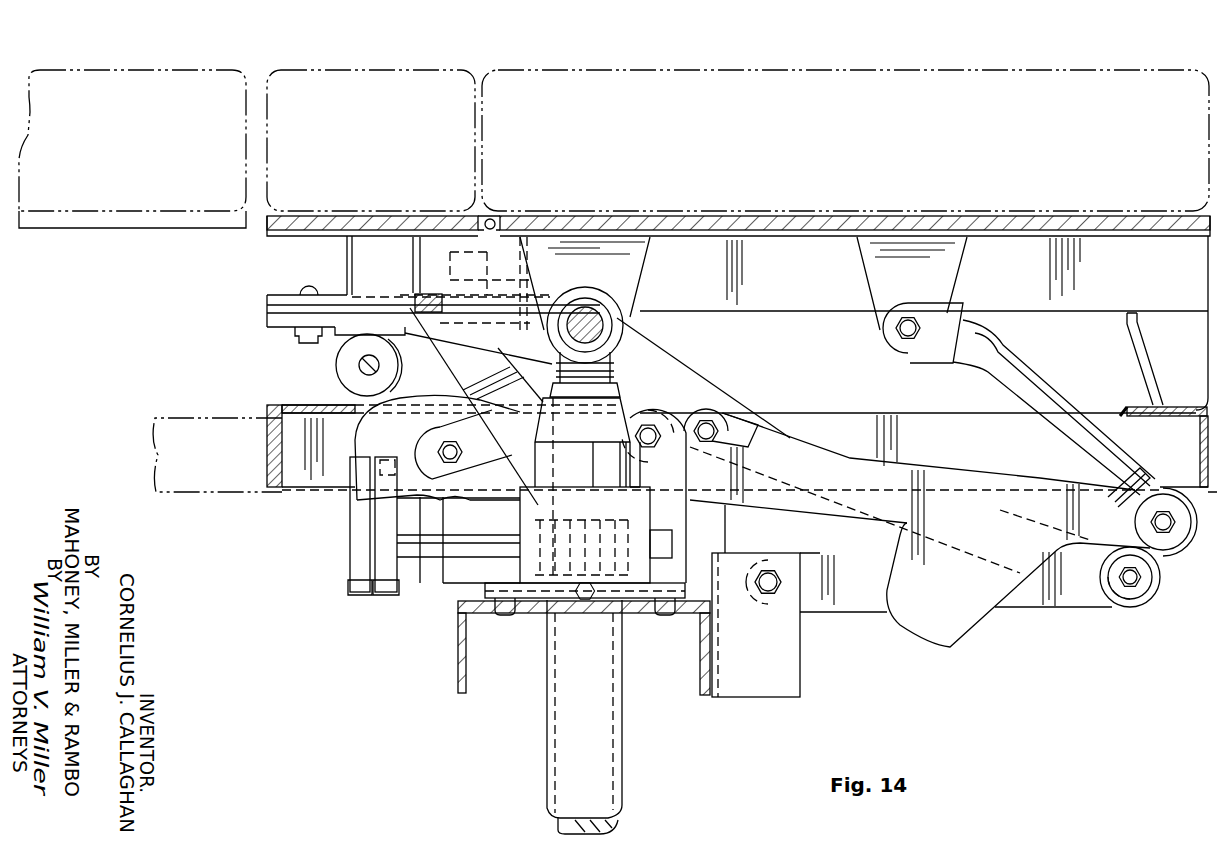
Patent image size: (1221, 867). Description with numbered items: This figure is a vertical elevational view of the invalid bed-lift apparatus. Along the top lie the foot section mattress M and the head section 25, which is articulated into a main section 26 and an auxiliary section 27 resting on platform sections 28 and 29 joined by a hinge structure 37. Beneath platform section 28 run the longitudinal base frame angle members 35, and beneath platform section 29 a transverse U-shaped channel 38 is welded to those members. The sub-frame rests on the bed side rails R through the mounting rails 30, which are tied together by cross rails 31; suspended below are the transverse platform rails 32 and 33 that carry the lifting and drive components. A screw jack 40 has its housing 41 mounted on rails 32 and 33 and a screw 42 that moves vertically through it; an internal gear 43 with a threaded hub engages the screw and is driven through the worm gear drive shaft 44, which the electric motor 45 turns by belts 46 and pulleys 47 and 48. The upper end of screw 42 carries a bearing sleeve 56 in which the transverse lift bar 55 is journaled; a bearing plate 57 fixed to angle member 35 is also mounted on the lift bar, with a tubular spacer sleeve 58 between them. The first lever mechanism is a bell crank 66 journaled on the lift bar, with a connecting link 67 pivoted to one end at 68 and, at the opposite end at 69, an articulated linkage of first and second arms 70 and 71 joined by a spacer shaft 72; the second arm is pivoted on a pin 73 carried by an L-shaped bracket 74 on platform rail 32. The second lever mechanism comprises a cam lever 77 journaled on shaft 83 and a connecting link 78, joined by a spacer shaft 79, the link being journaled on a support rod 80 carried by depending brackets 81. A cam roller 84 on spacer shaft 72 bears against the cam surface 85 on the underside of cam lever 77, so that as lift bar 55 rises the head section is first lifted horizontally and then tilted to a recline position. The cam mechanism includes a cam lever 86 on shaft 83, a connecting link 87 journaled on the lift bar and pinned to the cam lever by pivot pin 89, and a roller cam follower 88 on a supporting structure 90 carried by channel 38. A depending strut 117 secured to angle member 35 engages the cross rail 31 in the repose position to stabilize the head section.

The first mattress portion M is at (176, 68).
The side rails R is at (234, 418).
The second mattress portion 25 is at (824, 70).
The main section 26 is at (1070, 70).
The auxiliary section 27 is at (396, 70).
The platform section 28 is at (1095, 217).
The platform section 29 is at (378, 217).
The mounting rails 30 is at (878, 412).
The cross rails 31 is at (320, 405).
The platform rail 32 is at (700, 678).
The platform rail 33 is at (466, 670).
The structural angle members 35 is at (832, 283).
The hinge structure 37 is at (490, 218).
The U-shaped channel 38 is at (308, 294).
The screw jack 40 is at (622, 720).
The housing 41 is at (637, 463).
The screw 42 is at (613, 378).
The gear 43 is at (536, 606).
The worm gear drive shaft 44 is at (447, 560).
The electric motor 45 is at (470, 592).
The belts 46 is at (362, 552).
The pulleys 47 is at (367, 480).
The drive pulleys 48 is at (352, 595).
The lift bar 55 is at (600, 306).
The bearing sleeve 56 is at (584, 300).
The bearing plate 57 is at (652, 252).
The tubular spacer sleeve 58 is at (632, 297).
The bell crank 66 is at (387, 368).
The connecting link 67 is at (445, 362).
The pivot connection 68 is at (412, 308).
The pivot connection 69 is at (716, 412).
The first arm 70 is at (775, 422).
The second arm 71 is at (833, 612).
The spacer shaft 72 is at (1135, 598).
The pivot pin 73 is at (768, 600).
The L-shaped bracket 74 is at (780, 690).
The cam lever 77 is at (996, 474).
The connecting link 78 is at (1040, 384).
The spacer shaft 79 is at (1176, 526).
The support rod 80 is at (925, 320).
The depending brackets 81 is at (962, 266).
The transversely-extending shaft 83 is at (657, 422).
The cam roller 84 is at (1110, 600).
The cam surface 85 is at (972, 620).
The cam lever 86 is at (357, 433).
The connecting link 87 is at (458, 402).
The roller-type cam follower 88 is at (334, 358).
The pivot pin 89 is at (438, 446).
The supporting structure 90 is at (264, 307).
The depending struts 117 is at (1145, 347).